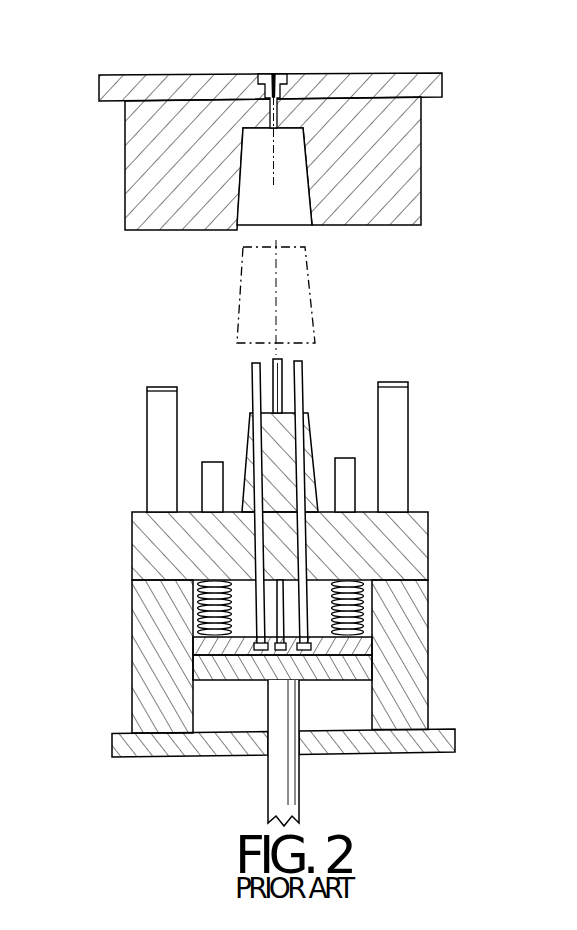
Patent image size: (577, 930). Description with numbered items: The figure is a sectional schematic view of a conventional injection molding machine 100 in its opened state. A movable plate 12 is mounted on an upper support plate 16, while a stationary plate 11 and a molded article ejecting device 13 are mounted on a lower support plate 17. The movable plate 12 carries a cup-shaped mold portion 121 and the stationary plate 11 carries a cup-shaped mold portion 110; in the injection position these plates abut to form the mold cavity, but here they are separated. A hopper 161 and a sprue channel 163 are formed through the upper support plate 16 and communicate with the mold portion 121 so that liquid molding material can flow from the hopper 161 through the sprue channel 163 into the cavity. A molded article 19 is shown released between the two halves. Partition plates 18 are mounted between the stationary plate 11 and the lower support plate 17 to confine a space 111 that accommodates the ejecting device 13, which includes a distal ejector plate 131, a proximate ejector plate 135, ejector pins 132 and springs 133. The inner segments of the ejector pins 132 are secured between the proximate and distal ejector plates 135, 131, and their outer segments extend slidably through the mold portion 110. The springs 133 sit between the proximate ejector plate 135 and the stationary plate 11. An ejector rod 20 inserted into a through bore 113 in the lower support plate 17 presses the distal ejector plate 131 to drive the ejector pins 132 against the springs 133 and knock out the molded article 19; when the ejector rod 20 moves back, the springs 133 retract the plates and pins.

The injection molding machine 100 is at (428, 317).
The stationary plate 11 is at (428, 550).
The mold portion 110 is at (308, 437).
The space 111 is at (236, 703).
The through bore 113 is at (291, 737).
The movable plate 12 is at (421, 170).
The mold portion 121 is at (310, 207).
The molded article ejecting device 13 is at (351, 690).
The distal ejector plate 131 is at (362, 666).
The ejector pins 132 is at (298, 395).
The springs 133 is at (362, 604).
The proximate ejector plate 135 is at (190, 643).
The upper support plate 16 is at (338, 73).
The hopper 161 is at (276, 74).
The sprue channel 163 is at (271, 123).
The lower support plate 17 is at (445, 740).
The partition plates 18 is at (167, 697).
The molded article 19 is at (312, 292).
The ejector rod 20 is at (297, 804).